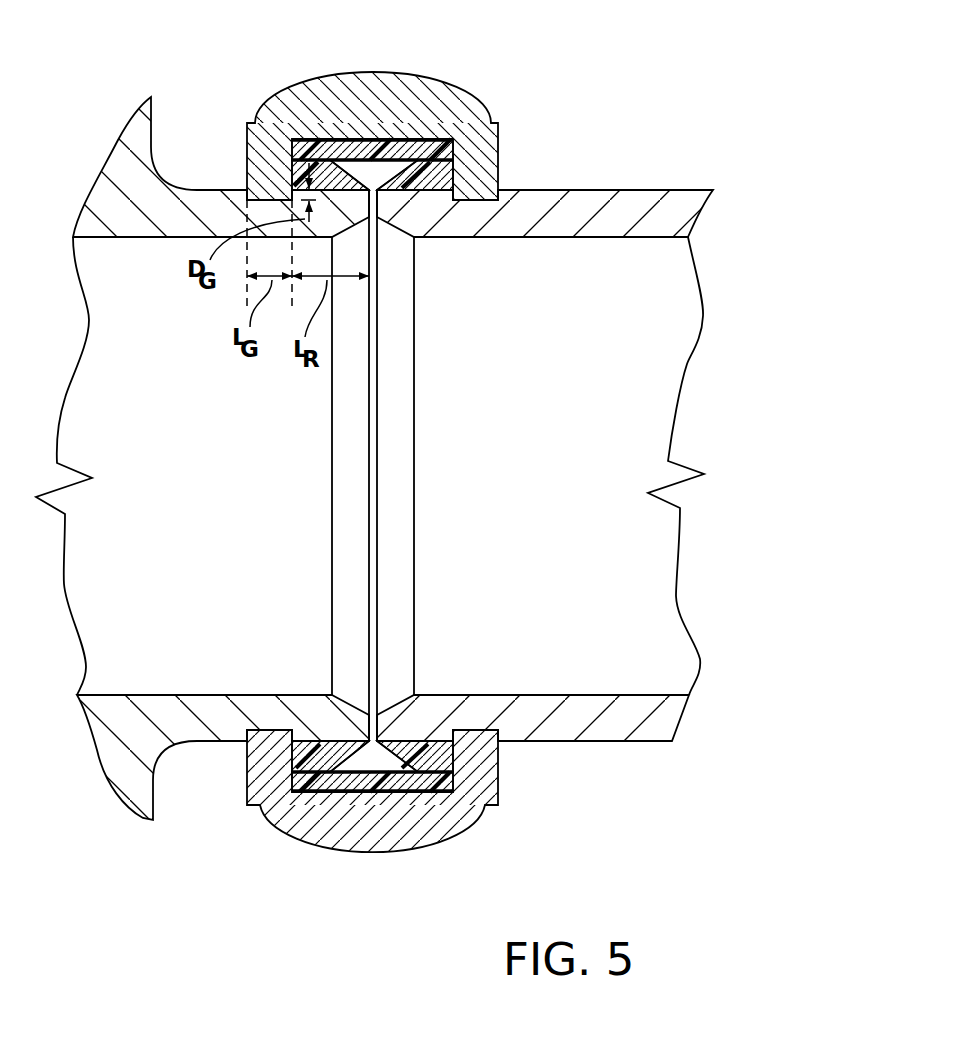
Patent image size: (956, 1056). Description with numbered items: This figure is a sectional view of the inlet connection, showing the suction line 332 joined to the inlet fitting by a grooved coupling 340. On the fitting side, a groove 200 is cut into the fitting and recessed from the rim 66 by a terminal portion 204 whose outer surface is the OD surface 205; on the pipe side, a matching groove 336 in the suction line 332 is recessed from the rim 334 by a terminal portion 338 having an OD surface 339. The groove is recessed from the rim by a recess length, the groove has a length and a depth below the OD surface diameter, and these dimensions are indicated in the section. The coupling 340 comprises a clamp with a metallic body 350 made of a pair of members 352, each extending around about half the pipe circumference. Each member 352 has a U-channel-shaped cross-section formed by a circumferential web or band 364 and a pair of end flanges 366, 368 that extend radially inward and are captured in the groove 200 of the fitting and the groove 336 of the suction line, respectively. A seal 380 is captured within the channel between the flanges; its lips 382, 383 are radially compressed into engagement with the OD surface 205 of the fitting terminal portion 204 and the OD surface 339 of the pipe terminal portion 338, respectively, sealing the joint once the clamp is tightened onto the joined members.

The suction line 332 is at (615, 170).
The terminal portion 204 is at (223, 733).
The groove 200 is at (248, 748).
The terminal portion 338 is at (425, 713).
The rim 66 is at (416, 465).
The rim 334 is at (377, 465).
The groove 336 is at (423, 480).
The member 352 is at (423, 480).
The web/band 364 is at (393, 117).
The seal 380 is at (370, 132).
The lip 382 is at (322, 175).
The lip 383 is at (440, 178).
The OD surface 339 is at (420, 172).
The coupling 340 is at (408, 833).
The metallic body 350 is at (466, 850).
The end flange 368 is at (408, 833).
The end flange 366 is at (266, 833).
The OD surface 205 is at (262, 735).